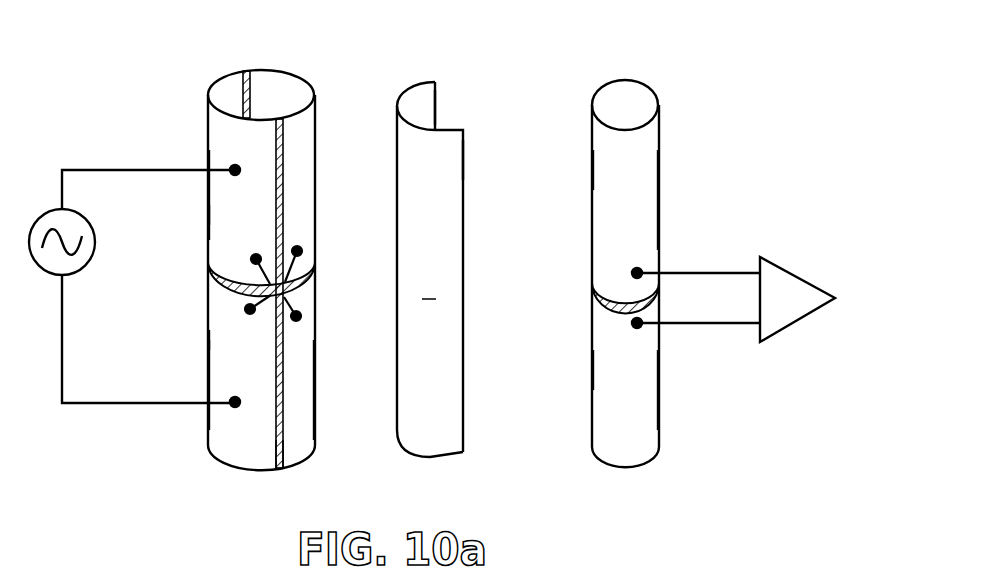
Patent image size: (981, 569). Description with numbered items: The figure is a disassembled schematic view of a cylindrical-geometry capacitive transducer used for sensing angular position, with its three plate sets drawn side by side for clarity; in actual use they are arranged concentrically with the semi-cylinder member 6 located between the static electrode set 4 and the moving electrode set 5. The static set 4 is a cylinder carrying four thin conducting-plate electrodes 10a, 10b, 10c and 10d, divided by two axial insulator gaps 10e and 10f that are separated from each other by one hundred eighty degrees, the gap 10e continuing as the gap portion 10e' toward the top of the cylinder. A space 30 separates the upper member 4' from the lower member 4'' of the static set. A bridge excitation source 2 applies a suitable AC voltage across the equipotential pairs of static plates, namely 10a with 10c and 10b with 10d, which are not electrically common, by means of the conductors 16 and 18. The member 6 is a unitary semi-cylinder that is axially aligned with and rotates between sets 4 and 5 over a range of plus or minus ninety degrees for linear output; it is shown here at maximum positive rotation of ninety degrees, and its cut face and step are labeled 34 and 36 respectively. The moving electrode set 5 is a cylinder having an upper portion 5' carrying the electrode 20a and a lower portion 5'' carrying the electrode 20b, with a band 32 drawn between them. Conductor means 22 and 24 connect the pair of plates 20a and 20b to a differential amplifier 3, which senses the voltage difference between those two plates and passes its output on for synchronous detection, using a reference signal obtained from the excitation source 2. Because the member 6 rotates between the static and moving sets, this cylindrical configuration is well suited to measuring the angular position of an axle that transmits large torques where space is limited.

The static electrode set 4 is at (220, 241).
The upper member of static set 4' is at (168, 210).
The lower member of static set 4'' is at (168, 336).
The bridge excitation source 2 is at (85, 265).
The conductor 18 is at (150, 170).
The conductor 16 is at (137, 405).
The space between upper and lower members 30 is at (212, 276).
The static electrode element 10a is at (262, 221).
The static electrode element 10b is at (262, 382).
The static electrode element 10c is at (308, 438).
The static electrode element 10d is at (294, 109).
The axial insulator gap 10e is at (319, 475).
The axial insulator gap portion 10e' is at (247, 293).
The axial insulator gap 10f is at (248, 70).
The semi-cylinder member 6 is at (797, 14).
The cut face of coupling member 34 is at (438, 110).
The step of coupling member 36 is at (463, 160).
The moving electrode set 5 is at (586, 273).
The upper portion of moving set 5' is at (560, 168).
The lower portion of moving set 5'' is at (557, 370).
The moving plate electrode 20a is at (640, 182).
The moving plate electrode 20b is at (640, 364).
The piezoelectric band of second member 32 is at (661, 290).
The conductor means 22 is at (700, 272).
The conductor means 24 is at (706, 324).
The differential amplifier 3 is at (789, 309).